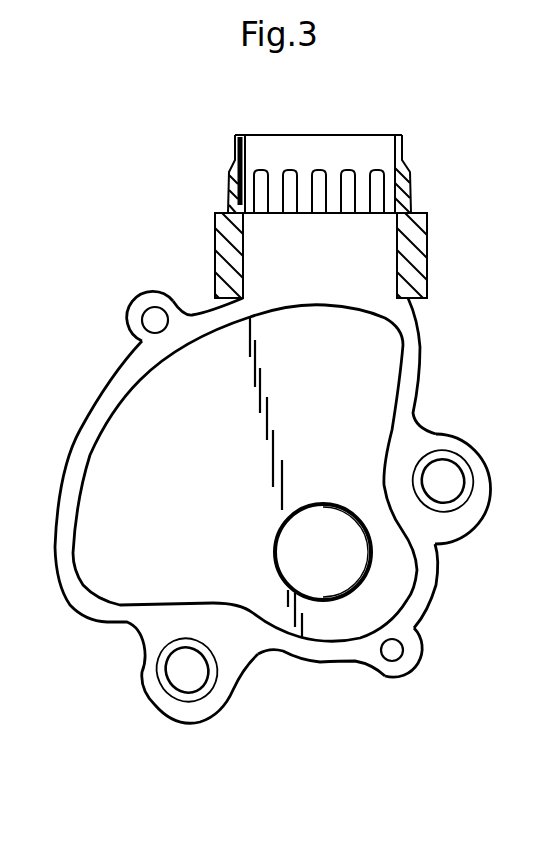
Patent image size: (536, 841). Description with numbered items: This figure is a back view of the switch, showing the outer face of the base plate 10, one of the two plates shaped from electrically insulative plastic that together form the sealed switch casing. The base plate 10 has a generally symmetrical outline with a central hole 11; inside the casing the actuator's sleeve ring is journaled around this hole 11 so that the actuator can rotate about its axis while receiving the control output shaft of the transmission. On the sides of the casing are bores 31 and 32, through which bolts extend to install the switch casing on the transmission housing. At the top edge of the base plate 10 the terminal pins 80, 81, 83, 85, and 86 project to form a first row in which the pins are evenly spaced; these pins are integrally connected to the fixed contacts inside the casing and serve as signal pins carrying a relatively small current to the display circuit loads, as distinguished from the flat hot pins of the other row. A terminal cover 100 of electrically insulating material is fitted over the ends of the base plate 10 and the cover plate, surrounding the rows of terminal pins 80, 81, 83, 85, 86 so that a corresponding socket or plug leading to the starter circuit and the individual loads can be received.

The base plate 10 is at (62, 600).
The hole 11 is at (325, 588).
The bore 31 is at (182, 683).
The bore 32 is at (452, 488).
The terminal pin 80 is at (378, 178).
The terminal pin 81 is at (321, 170).
The terminal pin 83 is at (351, 170).
The terminal pin 85 is at (289, 170).
The terminal pin 86 is at (255, 170).
The terminal cover 100 is at (427, 245).